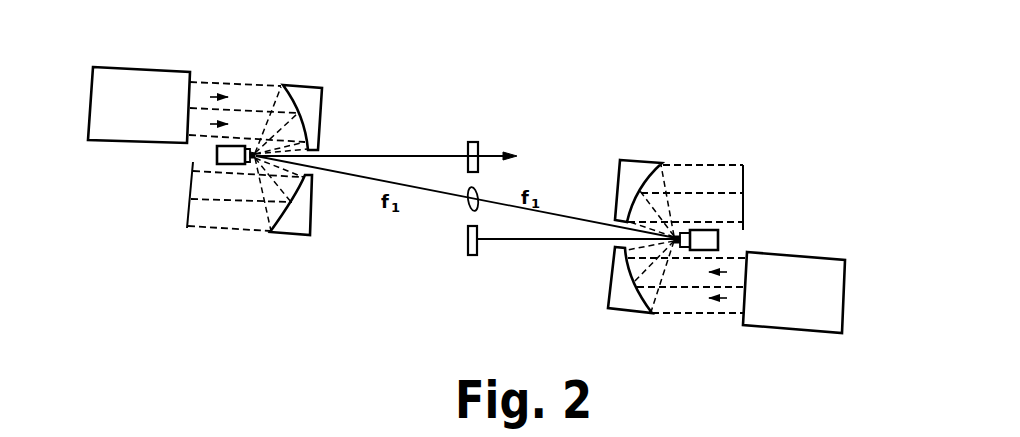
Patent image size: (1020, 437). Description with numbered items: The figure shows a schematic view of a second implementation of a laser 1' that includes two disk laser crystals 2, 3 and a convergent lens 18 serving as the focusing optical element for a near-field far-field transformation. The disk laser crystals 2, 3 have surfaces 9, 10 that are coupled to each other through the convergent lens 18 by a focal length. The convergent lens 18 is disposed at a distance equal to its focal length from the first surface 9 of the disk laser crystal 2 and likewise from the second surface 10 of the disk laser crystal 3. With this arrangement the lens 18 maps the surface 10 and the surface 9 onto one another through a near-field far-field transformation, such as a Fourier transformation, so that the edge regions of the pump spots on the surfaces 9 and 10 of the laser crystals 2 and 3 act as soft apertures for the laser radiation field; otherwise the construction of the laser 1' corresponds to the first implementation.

The laser 1' is at (470, 124).
The disk laser crystal 2 is at (253, 147).
The disk laser crystal 3 is at (685, 252).
The surface 9 is at (254, 139).
The surface 10 is at (681, 252).
The convergent lens 18 is at (468, 206).